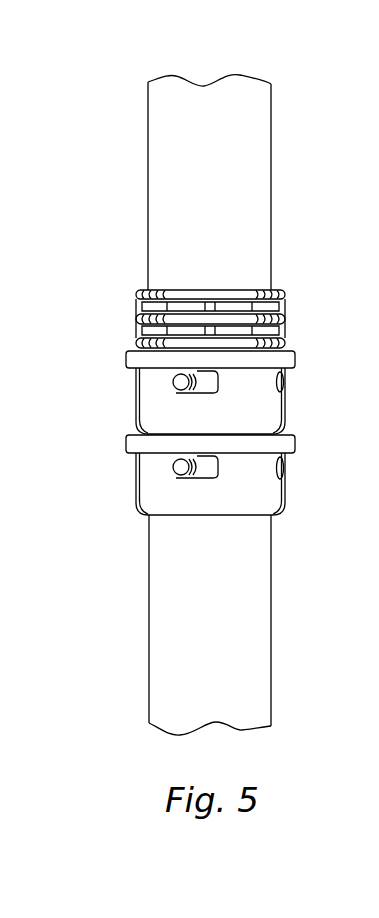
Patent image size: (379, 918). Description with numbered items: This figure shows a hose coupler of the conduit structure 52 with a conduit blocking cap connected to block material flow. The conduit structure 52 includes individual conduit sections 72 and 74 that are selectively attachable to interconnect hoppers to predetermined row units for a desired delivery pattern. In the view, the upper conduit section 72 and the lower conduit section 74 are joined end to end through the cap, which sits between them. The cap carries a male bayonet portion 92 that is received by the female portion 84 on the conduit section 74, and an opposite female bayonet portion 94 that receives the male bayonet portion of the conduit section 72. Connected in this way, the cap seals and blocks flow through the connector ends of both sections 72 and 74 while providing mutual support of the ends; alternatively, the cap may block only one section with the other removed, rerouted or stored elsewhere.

The conduit structure 52 is at (102, 244).
The conduit section 72 is at (258, 195).
The conduit section 74 is at (265, 624).
The female portion 84 is at (280, 496).
The female bayonet portion 94 is at (280, 406).
The male bayonet portion 92 is at (173, 467).